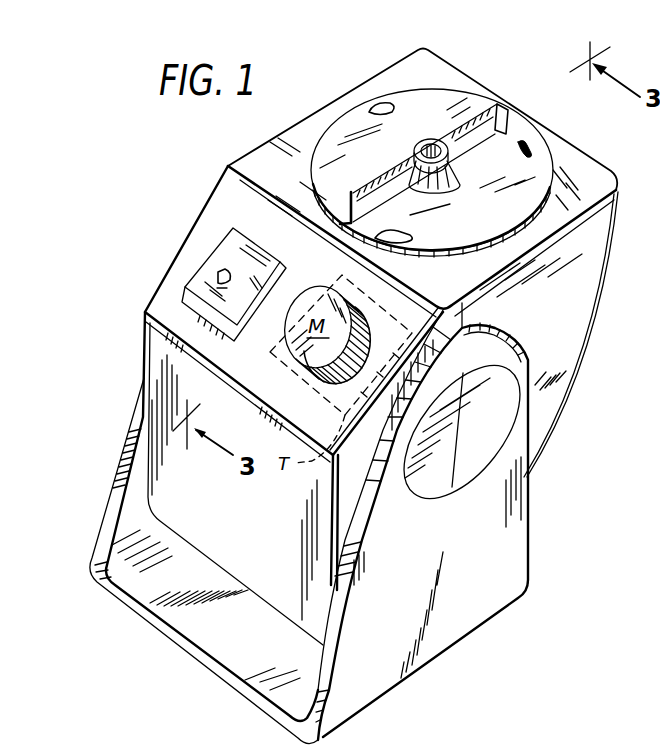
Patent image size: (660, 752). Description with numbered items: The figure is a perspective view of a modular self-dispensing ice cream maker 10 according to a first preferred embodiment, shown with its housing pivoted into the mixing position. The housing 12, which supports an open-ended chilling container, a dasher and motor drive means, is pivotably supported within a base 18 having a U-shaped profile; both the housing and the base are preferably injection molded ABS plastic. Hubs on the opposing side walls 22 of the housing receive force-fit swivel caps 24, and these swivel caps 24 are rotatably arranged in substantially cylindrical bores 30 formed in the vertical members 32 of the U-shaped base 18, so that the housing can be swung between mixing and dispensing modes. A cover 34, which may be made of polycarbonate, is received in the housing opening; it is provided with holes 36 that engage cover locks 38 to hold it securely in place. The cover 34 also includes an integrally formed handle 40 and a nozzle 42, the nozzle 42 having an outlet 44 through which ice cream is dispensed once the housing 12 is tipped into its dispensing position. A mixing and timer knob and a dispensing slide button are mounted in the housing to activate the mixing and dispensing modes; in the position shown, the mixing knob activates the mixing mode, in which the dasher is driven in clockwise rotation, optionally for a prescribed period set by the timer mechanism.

The modular self-dispensing ice cream maker 10 is at (615, 141).
The housing 12 is at (560, 305).
The base 18 is at (500, 569).
The side walls 22 is at (592, 245).
The swivel caps 24 is at (508, 397).
The cylindrical bores 30 is at (432, 500).
The vertical members 32 is at (522, 505).
The cover 34 is at (430, 113).
The holes 36 is at (396, 103).
The cover locks 38 is at (417, 237).
The handle 40 is at (483, 113).
The nozzle 42 is at (448, 174).
The outlet 44 is at (408, 145).